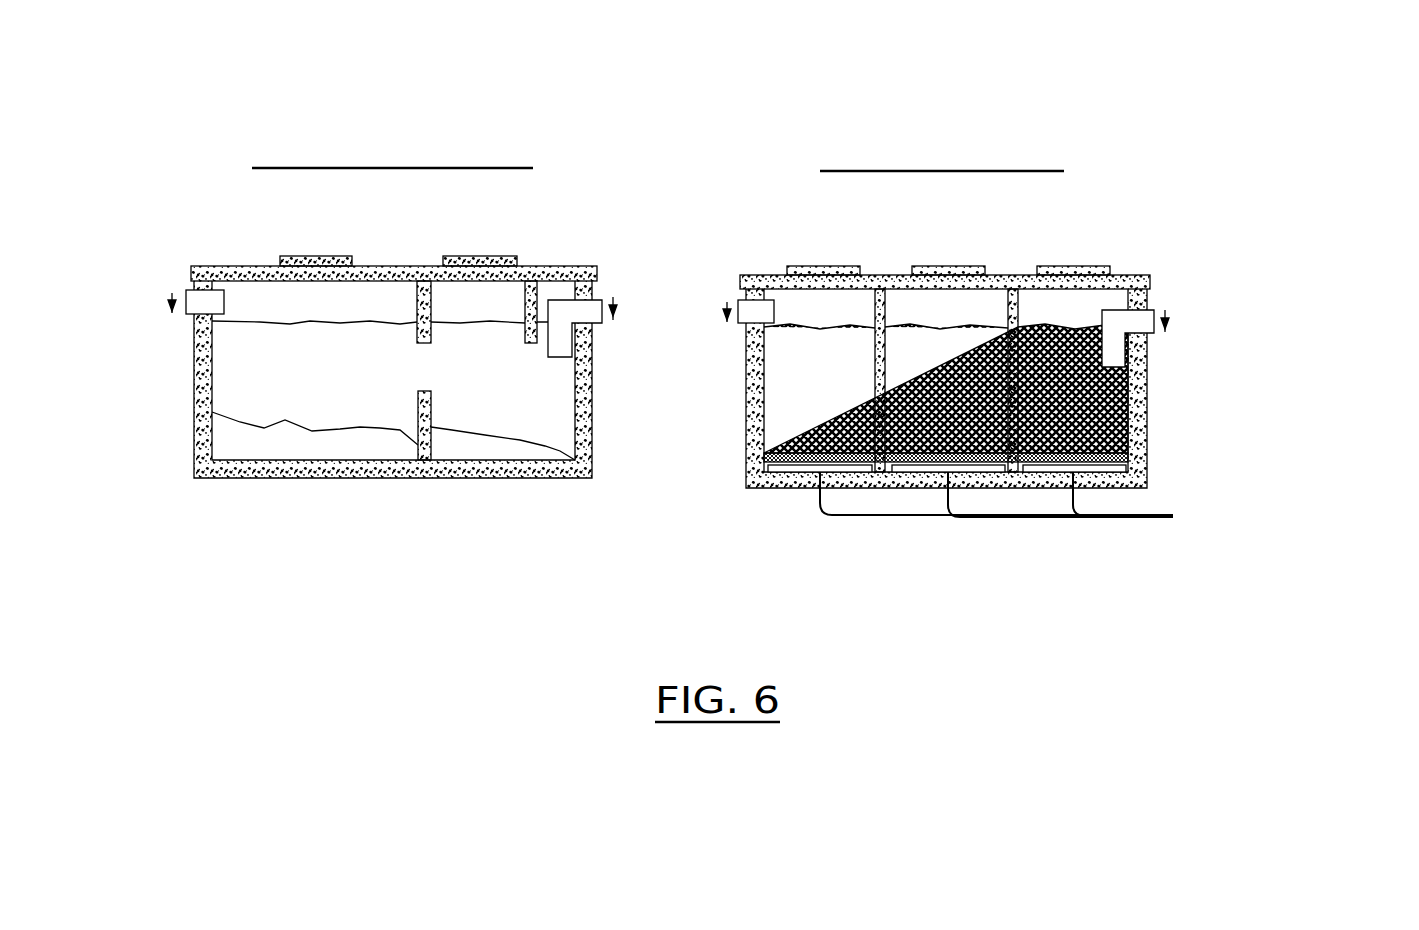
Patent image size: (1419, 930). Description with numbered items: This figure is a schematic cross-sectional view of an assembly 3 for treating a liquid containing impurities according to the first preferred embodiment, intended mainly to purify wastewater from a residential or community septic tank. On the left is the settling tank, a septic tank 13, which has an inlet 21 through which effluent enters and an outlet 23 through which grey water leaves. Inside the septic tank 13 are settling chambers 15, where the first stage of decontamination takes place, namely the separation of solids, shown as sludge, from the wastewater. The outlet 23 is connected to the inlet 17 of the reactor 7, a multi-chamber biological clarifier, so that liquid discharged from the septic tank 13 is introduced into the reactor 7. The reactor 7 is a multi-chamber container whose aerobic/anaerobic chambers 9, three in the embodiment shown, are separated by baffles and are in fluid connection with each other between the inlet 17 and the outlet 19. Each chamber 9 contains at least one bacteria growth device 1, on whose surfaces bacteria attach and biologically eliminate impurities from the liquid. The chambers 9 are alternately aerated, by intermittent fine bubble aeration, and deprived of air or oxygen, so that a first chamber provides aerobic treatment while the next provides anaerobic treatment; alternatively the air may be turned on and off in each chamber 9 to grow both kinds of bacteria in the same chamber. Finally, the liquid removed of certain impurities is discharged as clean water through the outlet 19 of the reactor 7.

The assembly 3 is at (801, 110).
The septic tank 13 is at (518, 273).
The settling chambers 15 is at (316, 387).
The inlet 21 is at (197, 297).
The outlet 23 is at (597, 302).
The reactor 7 is at (1121, 276).
The aerobic/anaerobic chambers 9 is at (826, 321).
The bacteria growth device 1 is at (1036, 429).
The inlet 17 is at (748, 302).
The outlet 19 is at (1152, 308).